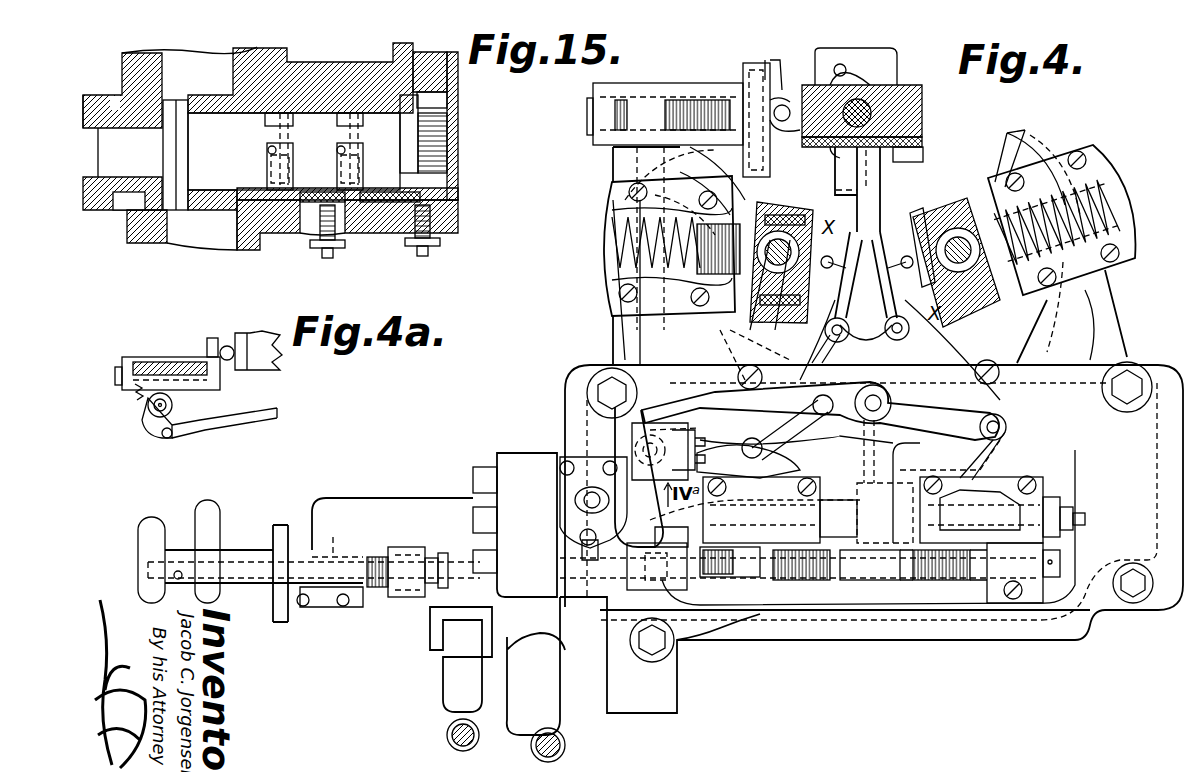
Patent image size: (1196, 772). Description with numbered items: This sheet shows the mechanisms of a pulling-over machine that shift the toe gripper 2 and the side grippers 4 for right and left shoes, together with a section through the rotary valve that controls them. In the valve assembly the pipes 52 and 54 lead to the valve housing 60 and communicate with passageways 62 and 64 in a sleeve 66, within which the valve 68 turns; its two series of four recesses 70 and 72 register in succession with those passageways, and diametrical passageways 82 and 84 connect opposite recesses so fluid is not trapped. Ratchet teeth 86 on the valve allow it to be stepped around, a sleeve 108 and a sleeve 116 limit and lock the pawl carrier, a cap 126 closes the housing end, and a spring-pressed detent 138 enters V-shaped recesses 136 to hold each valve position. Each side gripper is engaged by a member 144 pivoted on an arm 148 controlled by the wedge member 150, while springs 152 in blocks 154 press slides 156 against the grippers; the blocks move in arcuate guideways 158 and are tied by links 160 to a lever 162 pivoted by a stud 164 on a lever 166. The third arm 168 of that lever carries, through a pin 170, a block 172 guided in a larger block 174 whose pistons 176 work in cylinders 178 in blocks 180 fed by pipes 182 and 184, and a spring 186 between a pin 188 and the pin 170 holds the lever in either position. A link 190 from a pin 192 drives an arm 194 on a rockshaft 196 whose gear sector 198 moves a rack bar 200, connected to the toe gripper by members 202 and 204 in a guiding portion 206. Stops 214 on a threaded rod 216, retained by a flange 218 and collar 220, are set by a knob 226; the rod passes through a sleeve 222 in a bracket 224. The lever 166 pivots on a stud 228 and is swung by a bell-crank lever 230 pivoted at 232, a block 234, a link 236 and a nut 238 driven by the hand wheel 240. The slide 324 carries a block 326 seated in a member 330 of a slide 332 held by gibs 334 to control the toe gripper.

In FIG. 4, the toe gripper 2 is at (935, 100).
In FIG. 4, the side gripper 4 is at (818, 180).
In FIG. 15, the pipe 52 is at (428, 254).
In FIG. 15, the pipe 54 is at (333, 255).
In FIG. 15, the valve housing 60 is at (344, 72).
In FIG. 15, the passageway 62 is at (395, 210).
In FIG. 15, the passageway 64 is at (312, 205).
In FIG. 15, the sleeve 66 is at (458, 192).
In FIG. 15, the valve 68 is at (215, 185).
In FIG. 15, the recesses 70 is at (370, 146).
In FIG. 15, the recesses 72 is at (292, 150).
In FIG. 15, the passageways 82 is at (337, 152).
In FIG. 15, the passageways 84 is at (268, 150).
In FIG. 15, the ratchet teeth 86 is at (186, 150).
In FIG. 15, the sleeve 108 is at (130, 215).
In FIG. 15, the sleeve 116 is at (100, 188).
In FIG. 15, the cap 126 is at (145, 245).
In FIG. 15, the V-shaped recesses 136 is at (447, 138).
In FIG. 15, the detent 138 is at (430, 100).
In FIG. 4, the member 144 is at (867, 262).
In FIG. 4, the arm 148 is at (867, 313).
In FIG. 4, the wedge member 150 is at (920, 340).
In FIG. 4, the springs 152 is at (614, 245).
In FIG. 4, the blocks 154 is at (605, 238).
In FIG. 4, the slides 156 is at (783, 210).
In FIG. 4, the arcuate guideways 158 is at (770, 168).
In FIG. 4, the links 160 is at (745, 340).
In FIG. 4, the lever 162 is at (985, 455).
In FIG. 4, the stud 164 is at (886, 410).
In FIG. 4, the lever 166 is at (824, 402).
In FIG. 4, the third arm 168 is at (895, 460).
In FIG. 4, the pin 170 is at (836, 570).
In FIG. 4, the block 172 is at (935, 520).
In FIG. 4, the block 174 is at (955, 490).
In FIG. 4, the pistons 176 is at (1005, 472).
In FIG. 4, the cylinders 178 is at (1060, 500).
In FIG. 4, the blocks 180 is at (1050, 472).
In FIG. 4, the pipe 182 is at (800, 577).
In FIG. 4, the pipe 184 is at (1075, 518).
In FIG. 4, the spring 186 is at (878, 440).
In FIG. 4, the pin 188 is at (776, 451).
In FIG. 4A, the link 190 is at (243, 420).
In FIG. 4, the link 190 is at (755, 474).
In FIG. 4, the pin 192 is at (950, 456).
In FIG. 4A, the arm 194 is at (152, 425).
In FIG. 4A, the rockshaft 196 is at (173, 405).
In FIG. 4, the rockshaft 196 is at (620, 340).
In FIG. 4A, the gear sector 198 is at (140, 395).
In FIG. 4A, the rack bar 200 is at (122, 375).
In FIG. 4, the rack bar 200 is at (590, 120).
In FIG. 4, the member 202 is at (782, 105).
In FIG. 4A, the member 204 is at (227, 346).
In FIG. 4, the member 204 is at (768, 62).
In FIG. 4A, the guiding portion 206 is at (207, 347).
In FIG. 4, the guiding portion 206 is at (743, 70).
In FIG. 4, the stops 214 is at (830, 585).
In FIG. 4, the rod 216 is at (920, 590).
In FIG. 4, the flange 218 is at (1000, 607).
In FIG. 4, the collar 220 is at (1062, 560).
In FIG. 4, the sleeve 222 is at (337, 539).
In FIG. 4, the bracket 224 is at (395, 500).
In FIG. 4, the knob 226 is at (152, 520).
In FIG. 4, the stud 228 is at (849, 349).
In FIG. 4, the bell-crank lever 230 is at (755, 355).
In FIG. 4, the pivot 232 is at (575, 440).
In FIG. 4, the block 234 is at (557, 679).
In FIG. 4, the link 236 is at (528, 565).
In FIG. 4, the nut 238 is at (410, 547).
In FIG. 4, the hand wheel 240 is at (205, 515).
In FIG. 4, the slide 324 is at (878, 182).
In FIG. 4, the block 326 is at (923, 148).
In FIG. 4, the member 330 is at (840, 178).
In FIG. 4, the slide 332 is at (905, 130).
In FIG. 4, the gibs 334 is at (905, 142).